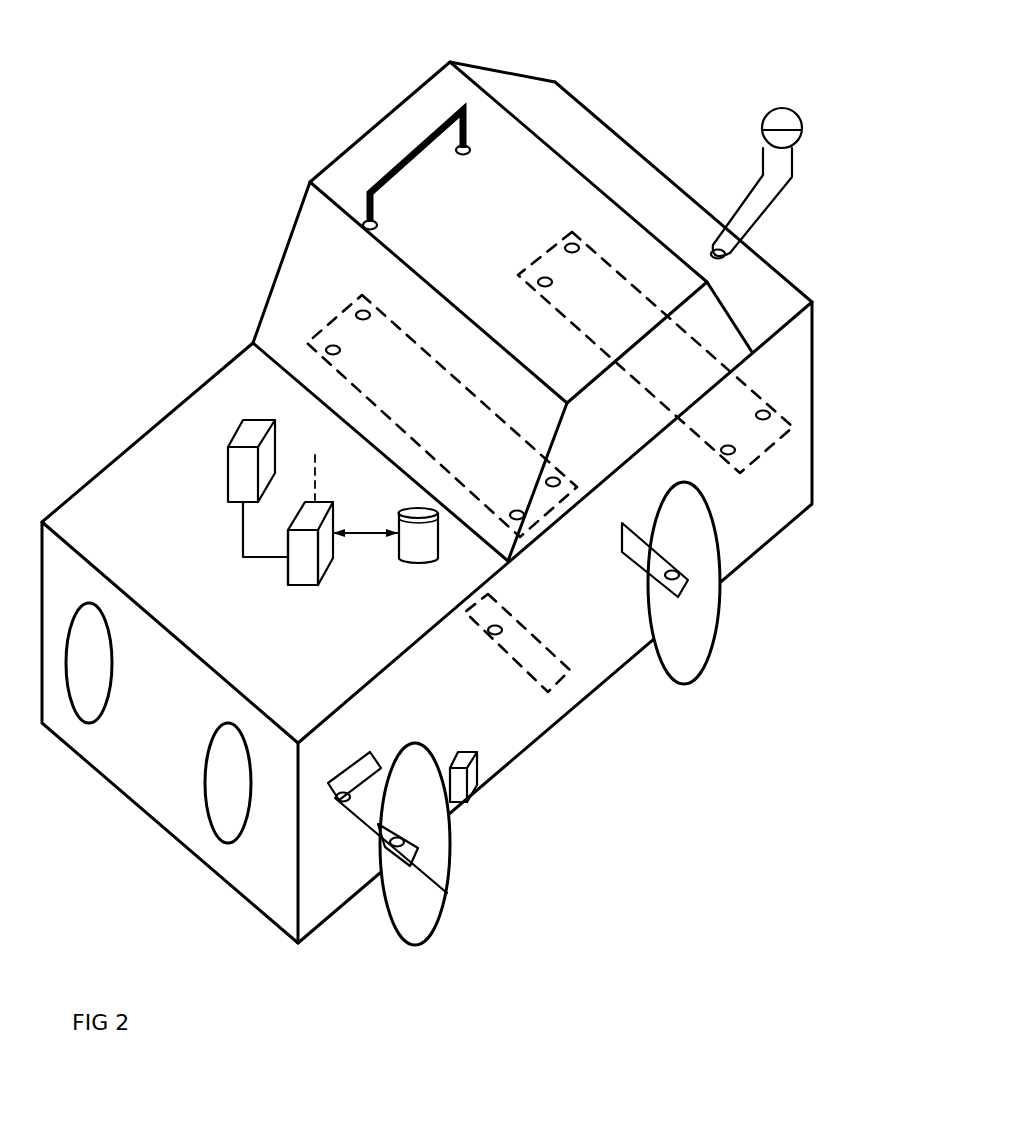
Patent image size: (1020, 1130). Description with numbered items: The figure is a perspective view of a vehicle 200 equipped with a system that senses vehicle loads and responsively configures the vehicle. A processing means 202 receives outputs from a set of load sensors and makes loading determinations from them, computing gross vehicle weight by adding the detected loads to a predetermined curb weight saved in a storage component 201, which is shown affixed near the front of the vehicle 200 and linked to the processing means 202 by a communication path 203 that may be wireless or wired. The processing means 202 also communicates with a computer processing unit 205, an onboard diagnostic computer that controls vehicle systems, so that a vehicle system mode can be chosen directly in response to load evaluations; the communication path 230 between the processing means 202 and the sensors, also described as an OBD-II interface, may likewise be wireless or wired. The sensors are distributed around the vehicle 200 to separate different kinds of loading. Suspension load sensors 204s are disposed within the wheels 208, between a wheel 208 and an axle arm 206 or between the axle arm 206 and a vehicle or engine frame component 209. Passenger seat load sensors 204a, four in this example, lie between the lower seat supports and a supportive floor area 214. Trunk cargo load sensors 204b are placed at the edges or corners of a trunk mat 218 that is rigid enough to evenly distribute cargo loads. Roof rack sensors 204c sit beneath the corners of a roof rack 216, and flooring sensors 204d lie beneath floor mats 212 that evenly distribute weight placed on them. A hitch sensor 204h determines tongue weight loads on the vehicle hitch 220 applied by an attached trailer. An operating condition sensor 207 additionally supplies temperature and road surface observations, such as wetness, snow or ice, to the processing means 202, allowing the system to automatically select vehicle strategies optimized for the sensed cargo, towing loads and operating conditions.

The vehicle 200 is at (328, 56).
The storage component 201 is at (418, 563).
The processing means 202 is at (288, 585).
The communication path 203 is at (377, 537).
The passenger seat load sensors 204a is at (342, 357).
The trunk cargo load sensors 204b is at (773, 413).
The roof rack sensors 204c is at (381, 229).
The flooring sensors 204d is at (490, 636).
The hitch sensors 204h is at (719, 261).
The suspension load sensors 204s is at (343, 788).
The computer processing unit 205 is at (228, 476).
The axle arm 206 is at (360, 830).
The operating condition sensor 207 is at (477, 760).
The wheel 208 is at (408, 944).
The vehicle or engine frame component 209 is at (372, 752).
The floor mat 212 is at (512, 617).
The supportive floor area 214 is at (330, 327).
The roof rack 216 is at (375, 173).
The trunk mat 218 is at (781, 438).
The vehicle hitch 220 is at (747, 193).
The communication path 230 is at (315, 452).